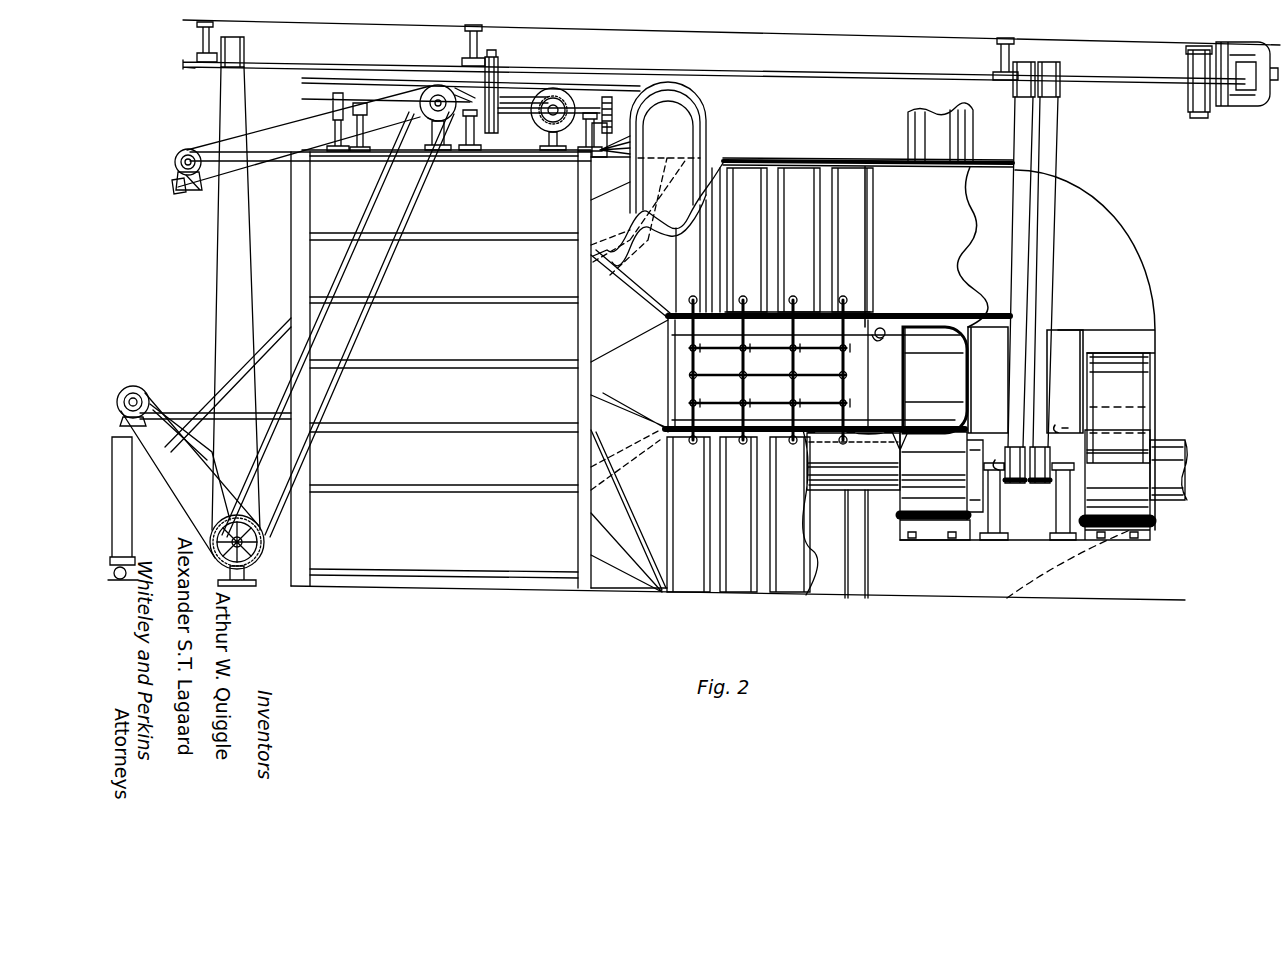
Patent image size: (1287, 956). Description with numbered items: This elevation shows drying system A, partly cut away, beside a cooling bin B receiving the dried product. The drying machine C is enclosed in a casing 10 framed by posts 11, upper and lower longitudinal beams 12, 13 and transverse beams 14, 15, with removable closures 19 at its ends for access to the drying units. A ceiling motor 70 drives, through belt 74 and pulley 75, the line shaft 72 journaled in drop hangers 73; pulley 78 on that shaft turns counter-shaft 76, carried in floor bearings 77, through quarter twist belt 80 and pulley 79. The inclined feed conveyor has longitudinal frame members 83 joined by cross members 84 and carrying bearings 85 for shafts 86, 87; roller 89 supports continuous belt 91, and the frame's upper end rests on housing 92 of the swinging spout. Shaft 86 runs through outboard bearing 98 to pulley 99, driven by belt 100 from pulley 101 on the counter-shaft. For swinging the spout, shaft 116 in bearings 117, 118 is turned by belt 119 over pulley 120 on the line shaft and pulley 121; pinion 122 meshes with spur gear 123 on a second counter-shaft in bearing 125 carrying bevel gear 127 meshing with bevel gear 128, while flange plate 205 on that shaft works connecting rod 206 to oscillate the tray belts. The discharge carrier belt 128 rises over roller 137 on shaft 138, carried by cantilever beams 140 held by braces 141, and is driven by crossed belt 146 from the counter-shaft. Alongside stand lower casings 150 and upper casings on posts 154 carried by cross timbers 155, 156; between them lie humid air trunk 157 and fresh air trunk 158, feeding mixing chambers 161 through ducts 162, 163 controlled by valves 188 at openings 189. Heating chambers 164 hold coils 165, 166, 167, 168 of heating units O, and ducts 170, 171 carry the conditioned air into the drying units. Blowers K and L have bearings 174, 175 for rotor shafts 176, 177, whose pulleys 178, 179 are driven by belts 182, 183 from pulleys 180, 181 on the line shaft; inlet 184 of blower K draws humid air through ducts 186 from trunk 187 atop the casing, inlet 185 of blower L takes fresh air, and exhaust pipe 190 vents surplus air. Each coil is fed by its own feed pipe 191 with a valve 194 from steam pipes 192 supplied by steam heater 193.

The casing 10 is at (316, 224).
The posts 11 is at (308, 268).
The upper longitudinal beams 12 is at (298, 170).
The lower longitudinal beams 13 is at (304, 587).
The transverse beams 14 is at (482, 162).
The transverse beams 15 is at (428, 588).
The removable closures 19 is at (463, 388).
The motor 70 is at (1245, 100).
The line shaft 72 is at (738, 73).
The drop hanger 73 is at (200, 37).
The belt 74 is at (1197, 115).
The pulley 75 is at (1186, 60).
The counter-shaft 76 is at (265, 542).
The bearings 77 is at (254, 577).
The pulley 78 is at (242, 42).
The pulley 79 is at (253, 505).
The quarter twist belt 80 is at (215, 243).
The longitudinal frame members 83 is at (268, 150).
The cross members 84 is at (177, 185).
The bearings 85 is at (188, 178).
The shaft 86 is at (425, 135).
The shaft 87 is at (186, 150).
The roller 89 is at (176, 162).
The continuous belt 91 is at (288, 120).
The housing 92 is at (460, 78).
The outboard bearing 98 is at (447, 151).
The pulley 99 is at (436, 85).
The belt 100 is at (392, 244).
The pulley 101 is at (550, 90).
The shaft 116 is at (522, 120).
The bearing 117 is at (470, 151).
The bearing 118 is at (598, 158).
The belt 119 is at (490, 57).
The pulley 120 is at (500, 62).
The pulley 121 is at (503, 142).
The pinion 122 is at (620, 118).
The spur gear 123 is at (608, 96).
The bearing 125 is at (362, 103).
The bevel gear 127 is at (575, 110).
The bevel gear 128 is at (556, 98).
The roller 137 is at (147, 390).
The shaft 138 is at (131, 385).
The cantilever beams 140 is at (180, 412).
The braces 141 is at (273, 345).
The crossed belt 146 is at (190, 470).
The casings 150 is at (700, 456).
The posts 154 is at (668, 383).
The supporting cross timbers 155 is at (670, 343).
The supporting cross timbers 156 is at (822, 325).
The humid air trunk 157 is at (950, 383).
The fresh air trunk 158 is at (1127, 405).
The mixing chambers 161 is at (960, 195).
The ducts 162 is at (945, 341).
The ducts 163 is at (1112, 348).
The heating chambers 164 is at (773, 175).
The heating coil 165 is at (700, 246).
The heating coil 166 is at (748, 180).
The heating coil 167 is at (797, 180).
The heating coil 168 is at (848, 178).
The ducts 170 is at (595, 481).
The ducts 171 is at (591, 277).
The bearings 174 is at (988, 520).
The bearings 175 is at (1066, 531).
The rotor shaft 176 is at (998, 462).
The rotor shaft 177 is at (1057, 458).
The pulley 178 is at (1022, 486).
The pulley 179 is at (1050, 490).
The pulley 180 is at (1026, 60).
The pulley 181 is at (1060, 66).
The belt 182 is at (1024, 151).
The belt 183 is at (1056, 125).
The inlet 184 is at (888, 500).
The inlet 185 is at (1160, 500).
The ducts 186 is at (672, 100).
The trunk 187 is at (308, 78).
The valves 188 is at (881, 325).
The openings 189 is at (935, 325).
The exhaust pipe 190 is at (925, 130).
The feed pipes 191 is at (693, 298).
The steam pipes 192 is at (713, 353).
The steam heater 193 is at (876, 360).
The valves 194 is at (742, 404).
The flange plate 205 is at (340, 94).
The connecting rod 206 is at (331, 163).
The drying system A is at (660, 600).
The cooling bins B is at (124, 536).
The drying machine C is at (490, 572).
The blower K is at (928, 528).
The blower L is at (1110, 522).
The heating units O is at (725, 593).